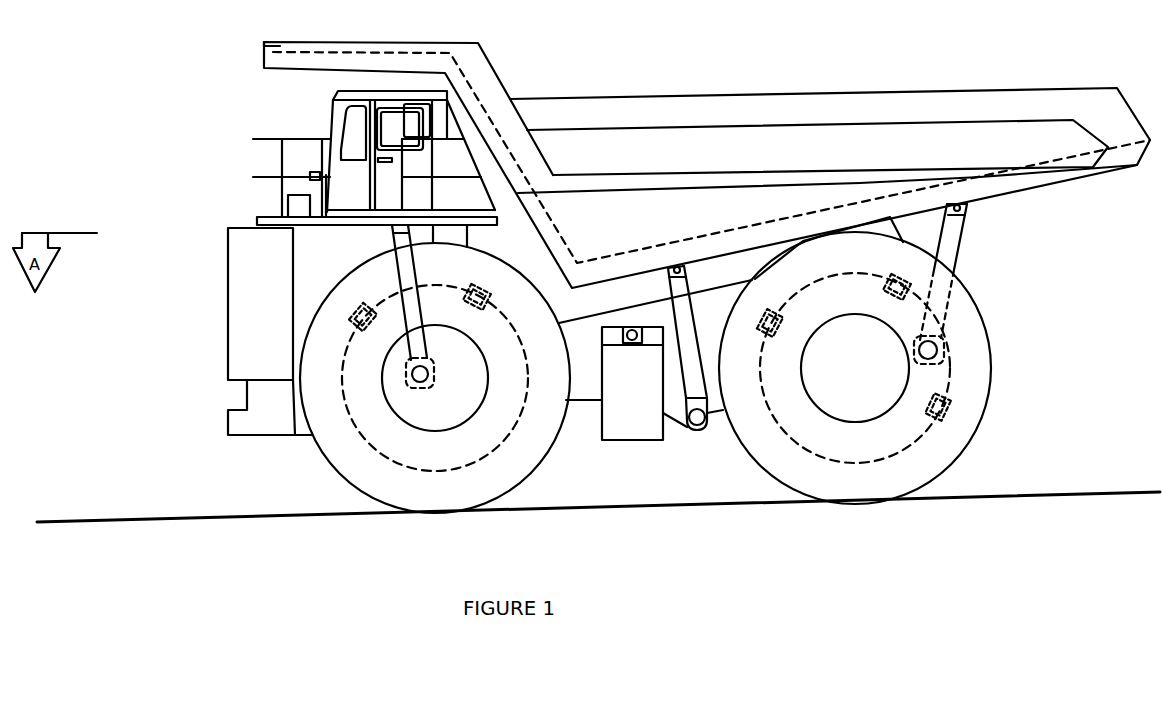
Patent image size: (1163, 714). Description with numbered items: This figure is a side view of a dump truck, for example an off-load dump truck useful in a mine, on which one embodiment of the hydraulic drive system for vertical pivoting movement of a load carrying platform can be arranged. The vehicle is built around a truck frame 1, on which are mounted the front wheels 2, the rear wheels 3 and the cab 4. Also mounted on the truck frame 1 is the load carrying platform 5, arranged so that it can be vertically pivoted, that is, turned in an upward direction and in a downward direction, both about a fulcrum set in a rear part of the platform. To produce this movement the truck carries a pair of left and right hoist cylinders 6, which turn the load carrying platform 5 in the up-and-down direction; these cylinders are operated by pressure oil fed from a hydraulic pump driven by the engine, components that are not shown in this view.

The truck frame 1 is at (585, 403).
The front wheels 2 is at (327, 463).
The rear wheels 3 is at (993, 372).
The cab 4 is at (335, 117).
The load carrying platform 5 is at (893, 92).
The hoist cylinders 6 is at (688, 367).